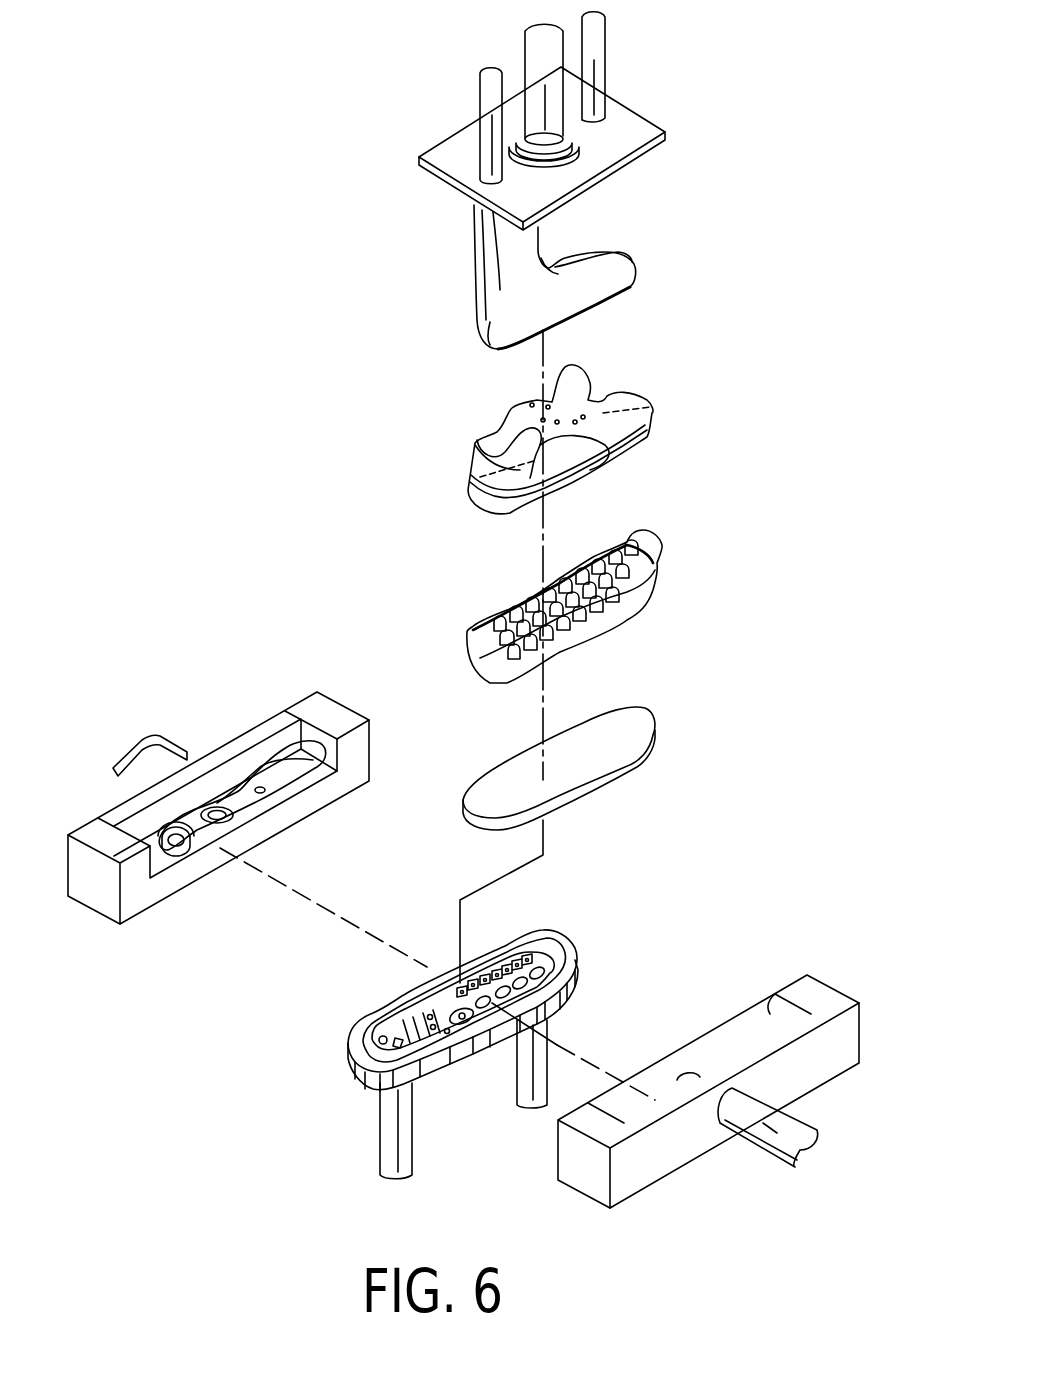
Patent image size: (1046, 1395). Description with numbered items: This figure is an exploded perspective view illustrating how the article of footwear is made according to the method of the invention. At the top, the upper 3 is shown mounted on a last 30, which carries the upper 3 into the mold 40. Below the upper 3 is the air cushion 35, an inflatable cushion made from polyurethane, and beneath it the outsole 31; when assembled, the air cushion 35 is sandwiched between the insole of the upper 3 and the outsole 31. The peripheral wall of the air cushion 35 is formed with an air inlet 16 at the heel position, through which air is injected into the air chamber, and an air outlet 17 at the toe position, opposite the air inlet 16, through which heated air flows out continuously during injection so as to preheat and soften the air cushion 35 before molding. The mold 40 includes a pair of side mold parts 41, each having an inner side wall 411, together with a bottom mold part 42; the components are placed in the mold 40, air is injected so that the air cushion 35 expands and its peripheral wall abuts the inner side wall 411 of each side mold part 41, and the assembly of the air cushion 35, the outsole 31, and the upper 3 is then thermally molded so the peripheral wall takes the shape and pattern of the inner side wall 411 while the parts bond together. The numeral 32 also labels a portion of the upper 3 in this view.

The upper 3 is at (611, 426).
The last 30 is at (642, 249).
The outsole 31 is at (637, 768).
The outsole of shoe 32 is at (600, 472).
The air cushion 35 is at (597, 606).
The air inlet 16 is at (477, 660).
The air outlet 17 is at (660, 557).
The mold 40 is at (461, 1017).
The side mold part 41 is at (461, 1017).
The inner side wall 411 is at (177, 850).
The bottom mold 42 is at (560, 950).